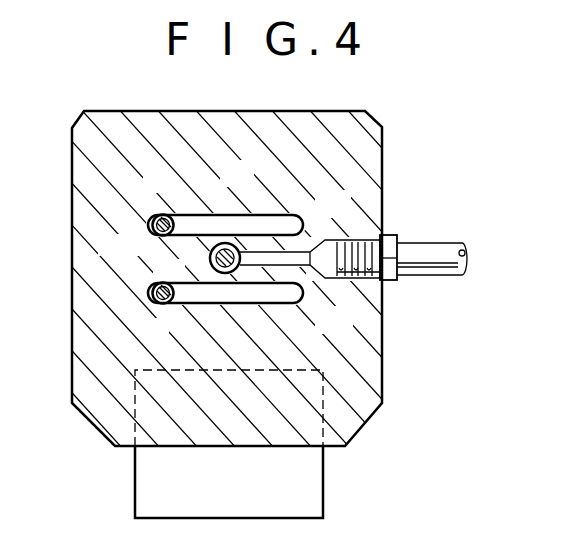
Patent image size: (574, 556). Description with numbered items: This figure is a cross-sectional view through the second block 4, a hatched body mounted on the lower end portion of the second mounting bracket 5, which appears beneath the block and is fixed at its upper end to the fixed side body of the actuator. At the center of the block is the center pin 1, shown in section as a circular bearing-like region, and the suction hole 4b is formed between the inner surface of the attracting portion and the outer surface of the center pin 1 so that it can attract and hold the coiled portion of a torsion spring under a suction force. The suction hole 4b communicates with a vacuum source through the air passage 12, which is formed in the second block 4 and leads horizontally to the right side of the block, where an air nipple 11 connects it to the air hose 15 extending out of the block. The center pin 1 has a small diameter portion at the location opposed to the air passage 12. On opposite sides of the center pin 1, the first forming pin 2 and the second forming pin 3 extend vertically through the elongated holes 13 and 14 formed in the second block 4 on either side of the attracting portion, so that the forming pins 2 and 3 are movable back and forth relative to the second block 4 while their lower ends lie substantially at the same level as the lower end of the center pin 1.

The center pin 1 is at (211, 259).
The first forming pin 2 is at (158, 213).
The second forming pin 3 is at (170, 306).
The second block 4 is at (363, 143).
The suction hole 4b is at (213, 266).
The second mounting bracket 5 is at (308, 500).
The air nipple 11 is at (397, 234).
The air passage 12 is at (289, 251).
The elongated hole 13 is at (239, 214).
The elongated hole 14 is at (298, 293).
The air hose 15 is at (450, 268).